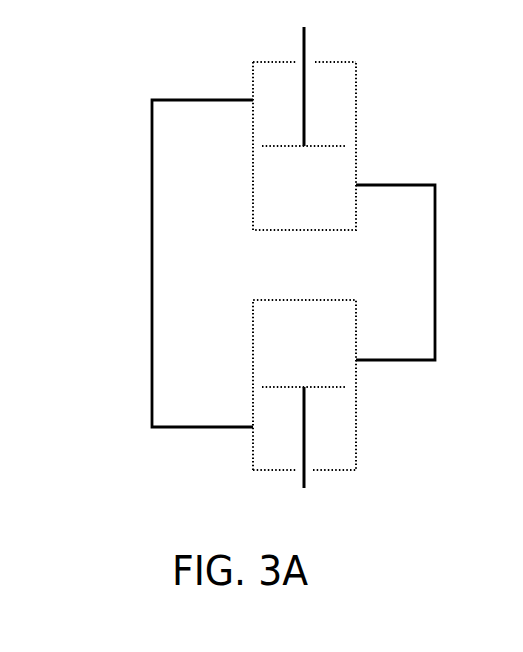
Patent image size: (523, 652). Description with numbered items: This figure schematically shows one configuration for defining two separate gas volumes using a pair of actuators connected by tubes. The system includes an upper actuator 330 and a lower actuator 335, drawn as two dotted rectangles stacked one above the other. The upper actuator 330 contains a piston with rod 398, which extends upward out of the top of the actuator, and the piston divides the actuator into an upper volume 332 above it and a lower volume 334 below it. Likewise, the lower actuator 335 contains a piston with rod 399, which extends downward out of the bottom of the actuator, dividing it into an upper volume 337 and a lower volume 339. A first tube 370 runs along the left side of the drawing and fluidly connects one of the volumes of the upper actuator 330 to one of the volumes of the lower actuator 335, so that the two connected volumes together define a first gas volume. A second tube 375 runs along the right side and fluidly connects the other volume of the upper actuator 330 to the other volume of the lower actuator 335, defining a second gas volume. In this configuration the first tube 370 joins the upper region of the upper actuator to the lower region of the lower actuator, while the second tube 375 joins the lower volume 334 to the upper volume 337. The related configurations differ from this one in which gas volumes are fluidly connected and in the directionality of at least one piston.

The upper actuator 330 is at (294, 122).
The upper volume 332 is at (333, 82).
The lower volume 334 is at (303, 173).
The lower actuator 335 is at (299, 395).
The upper volume 337 is at (303, 357).
The lower volume 339 is at (275, 432).
The first tube 370 is at (152, 208).
The second tube 375 is at (400, 185).
The piston with rod 398 is at (302, 50).
The piston with rod 399 is at (304, 475).